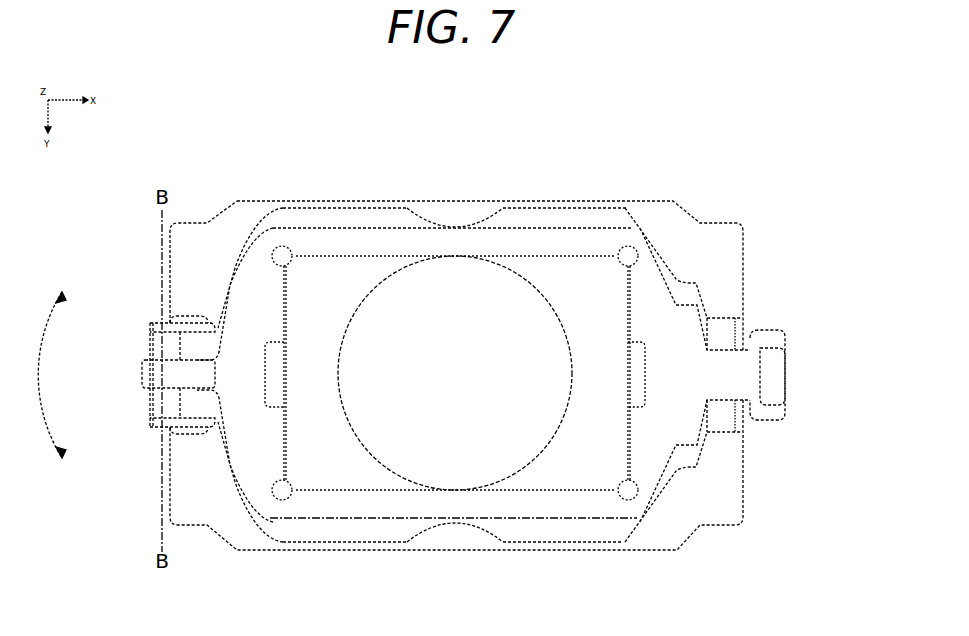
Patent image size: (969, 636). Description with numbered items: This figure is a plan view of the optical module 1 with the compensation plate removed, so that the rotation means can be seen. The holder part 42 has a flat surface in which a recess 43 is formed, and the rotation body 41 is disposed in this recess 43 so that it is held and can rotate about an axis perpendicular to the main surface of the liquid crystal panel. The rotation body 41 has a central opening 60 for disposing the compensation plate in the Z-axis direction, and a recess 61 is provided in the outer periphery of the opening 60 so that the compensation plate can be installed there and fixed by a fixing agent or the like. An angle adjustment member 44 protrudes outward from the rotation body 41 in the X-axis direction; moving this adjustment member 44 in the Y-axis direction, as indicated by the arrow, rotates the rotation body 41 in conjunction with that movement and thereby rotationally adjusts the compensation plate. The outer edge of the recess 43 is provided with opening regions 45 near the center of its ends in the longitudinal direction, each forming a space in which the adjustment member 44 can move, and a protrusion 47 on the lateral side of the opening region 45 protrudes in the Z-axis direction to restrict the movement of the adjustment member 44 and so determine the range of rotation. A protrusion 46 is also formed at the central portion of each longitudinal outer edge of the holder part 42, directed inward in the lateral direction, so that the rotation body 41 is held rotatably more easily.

The optical module 1 is at (698, 152).
The rotation body 41 is at (257, 285).
The holder part 42 is at (722, 250).
The recess 43 is at (586, 218).
The angle adjustment member 44 is at (150, 373).
The opening region 45 is at (176, 341).
The protrusion 46 is at (478, 212).
The protrusion 47 is at (150, 322).
The opening 60 is at (425, 292).
The recess 61 is at (342, 492).